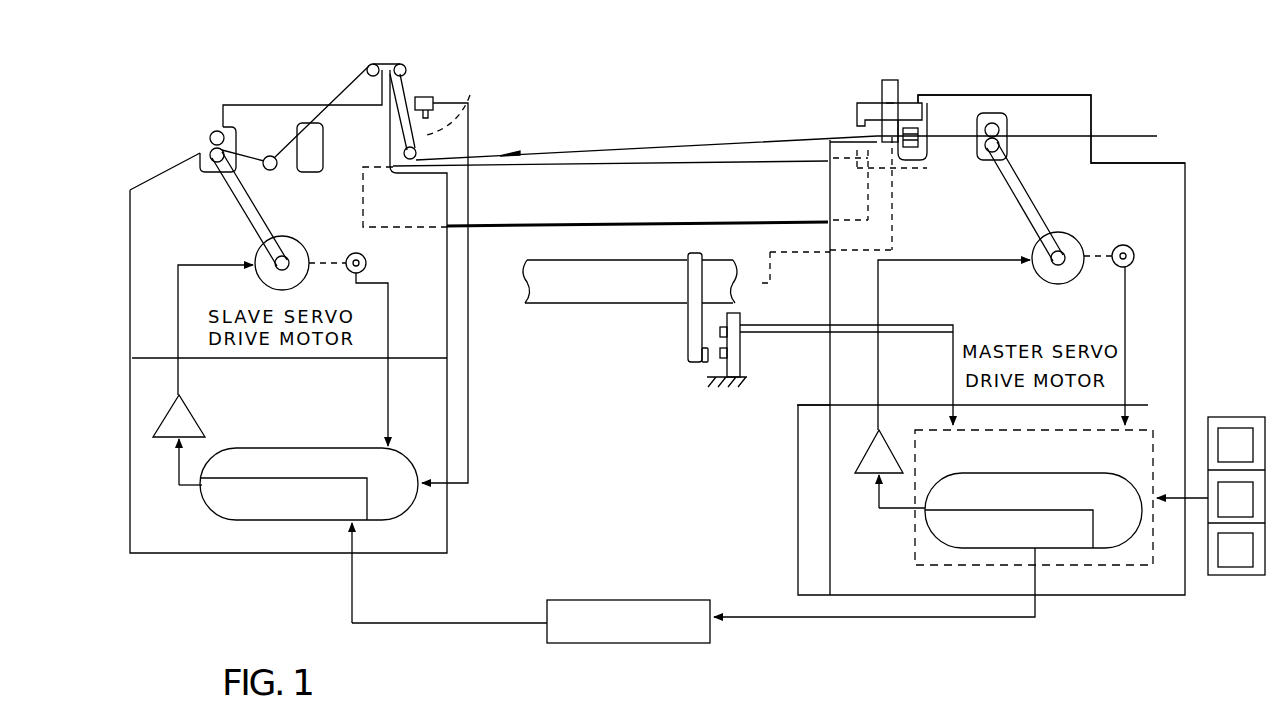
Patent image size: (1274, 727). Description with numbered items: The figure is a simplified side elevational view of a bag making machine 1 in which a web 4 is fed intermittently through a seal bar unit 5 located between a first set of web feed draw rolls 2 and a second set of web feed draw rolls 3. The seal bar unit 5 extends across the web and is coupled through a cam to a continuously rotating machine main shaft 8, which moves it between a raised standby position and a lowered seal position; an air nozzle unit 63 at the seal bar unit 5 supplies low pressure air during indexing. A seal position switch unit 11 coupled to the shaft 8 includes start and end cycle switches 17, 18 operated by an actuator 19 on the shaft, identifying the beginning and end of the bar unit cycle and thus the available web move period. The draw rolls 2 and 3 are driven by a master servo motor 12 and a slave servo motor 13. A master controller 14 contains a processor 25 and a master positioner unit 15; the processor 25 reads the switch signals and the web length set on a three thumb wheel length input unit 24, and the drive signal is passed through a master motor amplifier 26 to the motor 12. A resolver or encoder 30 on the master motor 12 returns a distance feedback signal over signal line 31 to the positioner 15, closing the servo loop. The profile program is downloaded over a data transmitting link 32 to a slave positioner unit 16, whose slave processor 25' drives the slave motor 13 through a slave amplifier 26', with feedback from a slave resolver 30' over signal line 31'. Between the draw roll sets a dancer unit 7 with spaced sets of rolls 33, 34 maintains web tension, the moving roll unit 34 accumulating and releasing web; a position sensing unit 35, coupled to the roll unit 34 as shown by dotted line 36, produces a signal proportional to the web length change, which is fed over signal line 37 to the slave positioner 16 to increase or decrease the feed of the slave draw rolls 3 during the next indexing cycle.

The bag making machine 1 is at (615, 457).
The first set of web feed draw rolls 2 is at (1029, 112).
The second set of web feed draw rolls 3 is at (198, 124).
The web 4 is at (647, 146).
The seal bar unit 5 is at (869, 89).
The tension control unit (dancer unit) 7 is at (423, 72).
The machine main shaft 8 is at (557, 297).
The seal position switch unit 11 is at (694, 378).
The master servo motor 12 is at (1080, 232).
The slave servo motor 13 is at (289, 229).
The master controller 14 is at (1047, 568).
The master motor and web positioner unit 15 is at (1120, 543).
The slave positioner unit 16 is at (373, 452).
The start cycle switch 17 is at (733, 330).
The end cycle switch 18 is at (742, 353).
The actuator 19 is at (687, 337).
The length input unit 24 is at (1247, 415).
The processor 25 is at (918, 486).
The slave processor 25' is at (283, 515).
The master motor amplifier 26 is at (884, 444).
The slave motor amplifier 26' is at (200, 431).
The resolver or encoder 30 is at (1125, 235).
The slave resolver or encoder 30' is at (364, 258).
The signal line 31 is at (1148, 343).
The slave signal line 31' is at (397, 359).
The data transmitting link 32 is at (660, 594).
The spaced set of rolls 33 is at (403, 56).
The moving roll unit 34 is at (421, 148).
The position sensing unit 35 is at (433, 98).
The dotted line 36 is at (460, 112).
The signal line 37 is at (470, 188).
The air nozzle unit 63 is at (912, 150).